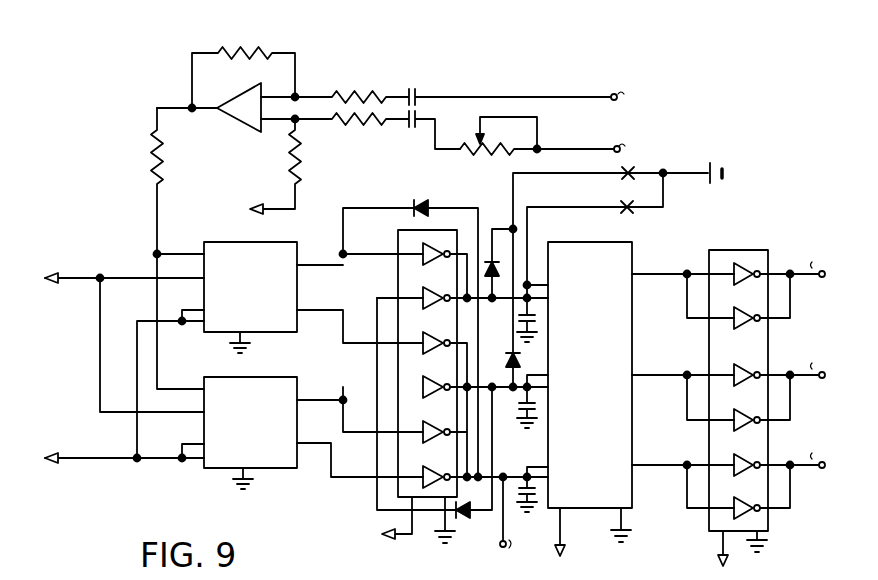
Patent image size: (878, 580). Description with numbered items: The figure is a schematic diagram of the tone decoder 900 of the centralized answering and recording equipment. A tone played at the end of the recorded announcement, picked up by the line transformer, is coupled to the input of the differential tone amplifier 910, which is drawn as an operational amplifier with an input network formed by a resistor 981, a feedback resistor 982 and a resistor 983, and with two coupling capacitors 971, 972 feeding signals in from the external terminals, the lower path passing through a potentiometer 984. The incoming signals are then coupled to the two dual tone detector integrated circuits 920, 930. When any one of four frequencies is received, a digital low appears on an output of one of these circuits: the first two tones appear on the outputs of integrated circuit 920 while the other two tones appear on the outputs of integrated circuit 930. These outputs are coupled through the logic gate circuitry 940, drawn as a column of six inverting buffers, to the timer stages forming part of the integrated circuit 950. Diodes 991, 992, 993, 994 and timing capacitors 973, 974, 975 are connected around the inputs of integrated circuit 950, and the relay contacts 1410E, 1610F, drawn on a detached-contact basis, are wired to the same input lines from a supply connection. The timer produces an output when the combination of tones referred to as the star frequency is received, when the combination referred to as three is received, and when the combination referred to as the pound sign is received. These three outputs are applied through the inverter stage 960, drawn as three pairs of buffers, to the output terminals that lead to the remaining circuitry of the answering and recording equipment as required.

The tone decoder 900 is at (451, 300).
The differential tone amplifier 910 is at (244, 132).
The dual tone detector integrated circuit 920 is at (281, 333).
The dual tone detector integrated circuit 930 is at (278, 469).
The logic gate circuitry 940 is at (398, 280).
The integrated circuit 950 is at (635, 261).
The inverter stage 960 is at (776, 261).
The coupling capacitor 971 is at (418, 88).
The coupling capacitor 972 is at (418, 128).
The capacitor 973 is at (523, 306).
The capacitor 974 is at (514, 410).
The capacitor 975 is at (516, 498).
The resistor 981 is at (165, 164).
The feedback resistor 982 is at (262, 50).
The resistor 983 is at (300, 164).
The potentiometer 984 is at (471, 160).
The diode 991 is at (412, 204).
The diode 992 is at (487, 258).
The diode 993 is at (507, 368).
The diode 994 is at (458, 516).
The relay contact 1410E is at (628, 178).
The relay contact 1610F is at (627, 212).